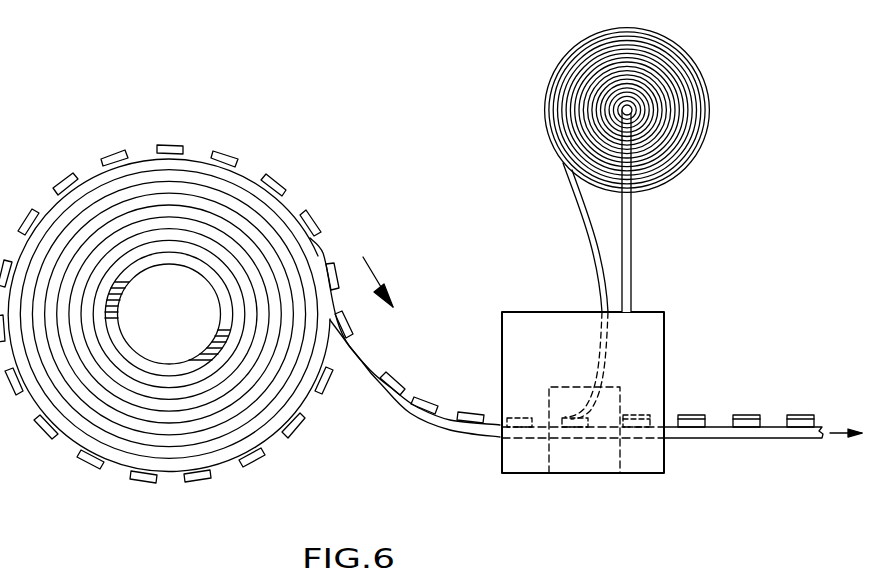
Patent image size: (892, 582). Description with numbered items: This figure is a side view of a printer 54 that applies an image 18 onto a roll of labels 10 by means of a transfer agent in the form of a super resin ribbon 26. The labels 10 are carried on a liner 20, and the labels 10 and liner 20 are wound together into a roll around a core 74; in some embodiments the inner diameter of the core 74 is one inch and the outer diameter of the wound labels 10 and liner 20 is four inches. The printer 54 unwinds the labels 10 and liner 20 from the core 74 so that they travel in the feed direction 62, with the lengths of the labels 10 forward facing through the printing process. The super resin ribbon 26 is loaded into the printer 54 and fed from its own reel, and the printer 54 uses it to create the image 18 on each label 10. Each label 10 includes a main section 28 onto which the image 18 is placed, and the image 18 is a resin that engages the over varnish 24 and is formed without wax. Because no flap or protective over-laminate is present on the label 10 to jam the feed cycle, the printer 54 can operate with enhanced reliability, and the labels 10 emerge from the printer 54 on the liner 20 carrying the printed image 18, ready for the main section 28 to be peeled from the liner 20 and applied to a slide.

The label 10 is at (803, 400).
The image 18 is at (692, 414).
The liner 20 is at (405, 406).
The over varnish 24 is at (392, 362).
The super resin ribbon 26 is at (667, 107).
The main section 28 is at (422, 390).
The printer 54 is at (522, 467).
The feed direction 62 is at (378, 273).
The core 74 is at (170, 258).